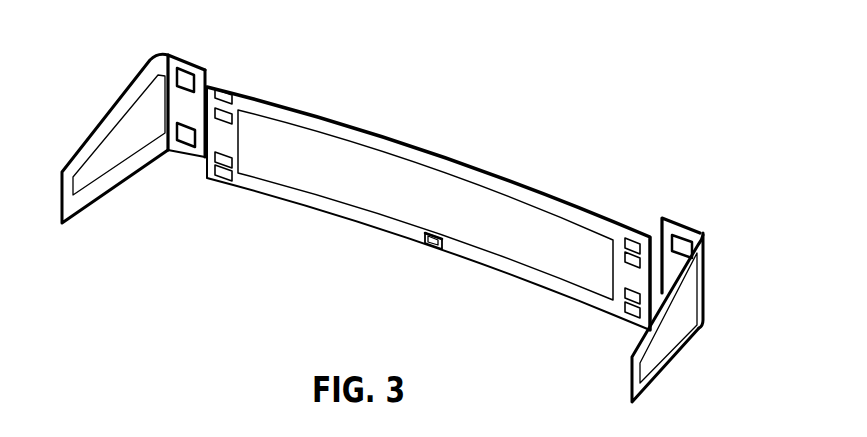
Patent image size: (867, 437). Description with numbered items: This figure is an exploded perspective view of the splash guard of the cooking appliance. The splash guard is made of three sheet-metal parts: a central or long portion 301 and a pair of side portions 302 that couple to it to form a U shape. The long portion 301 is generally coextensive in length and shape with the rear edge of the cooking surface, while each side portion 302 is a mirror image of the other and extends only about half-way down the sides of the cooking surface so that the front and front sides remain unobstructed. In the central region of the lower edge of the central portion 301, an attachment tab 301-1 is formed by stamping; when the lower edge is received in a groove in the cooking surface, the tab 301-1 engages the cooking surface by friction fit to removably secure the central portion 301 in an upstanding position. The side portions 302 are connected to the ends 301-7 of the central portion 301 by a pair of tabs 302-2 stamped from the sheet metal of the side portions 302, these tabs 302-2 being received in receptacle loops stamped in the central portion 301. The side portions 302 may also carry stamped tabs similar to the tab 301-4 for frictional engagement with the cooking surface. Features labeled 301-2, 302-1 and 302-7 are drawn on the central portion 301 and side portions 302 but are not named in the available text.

The central or long portion 301 is at (423, 146).
The attachment tab 301-1 is at (433, 249).
The tab top edge 301-2 is at (425, 240).
The tab 301-4 is at (436, 250).
The ends 301-7 is at (206, 176).
The side portions 302 is at (127, 73).
The end plate edge 302-1 is at (209, 88).
The tabs 302-2 is at (185, 136).
The upper square hole in end plate 302-7 is at (178, 66).